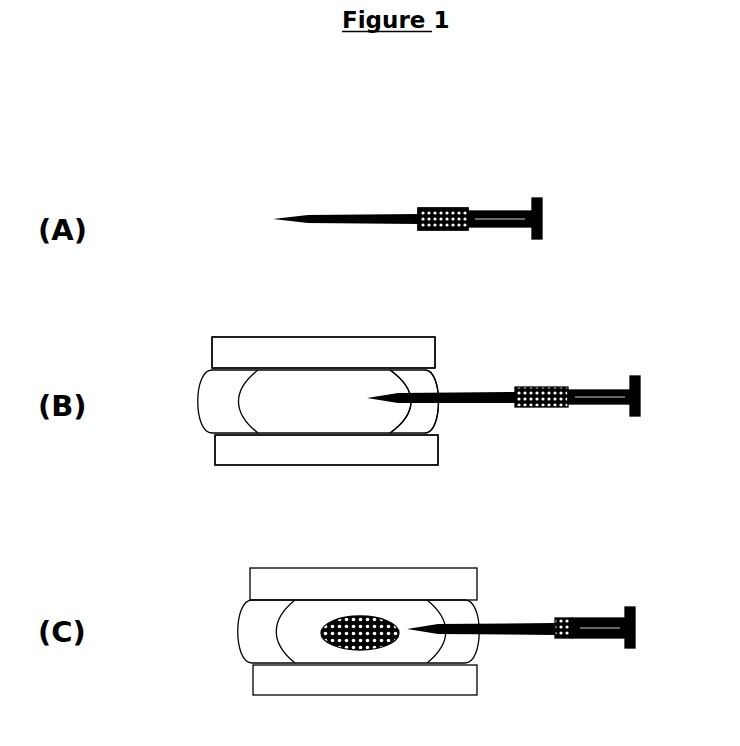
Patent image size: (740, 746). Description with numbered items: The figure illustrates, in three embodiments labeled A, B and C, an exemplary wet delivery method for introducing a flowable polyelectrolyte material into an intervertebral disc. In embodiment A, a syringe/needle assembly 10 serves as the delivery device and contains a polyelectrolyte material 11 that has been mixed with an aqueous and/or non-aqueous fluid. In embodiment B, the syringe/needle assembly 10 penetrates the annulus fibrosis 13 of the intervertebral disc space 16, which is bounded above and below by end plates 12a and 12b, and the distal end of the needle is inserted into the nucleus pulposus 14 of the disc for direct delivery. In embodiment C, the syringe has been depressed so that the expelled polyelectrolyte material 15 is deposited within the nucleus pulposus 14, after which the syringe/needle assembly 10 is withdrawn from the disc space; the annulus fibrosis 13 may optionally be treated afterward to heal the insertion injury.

The syringe/needle assembly 10 is at (401, 194).
The polyelectrolyte material 11 is at (452, 204).
The end plate 12a is at (209, 357).
The end plate 12b is at (210, 450).
The annulus fibrosis 13 is at (448, 416).
The nucleus pulposus 14 is at (408, 422).
The polyelectrolyte material 15 is at (375, 610).
The intervertebral disc space 16 is at (322, 322).